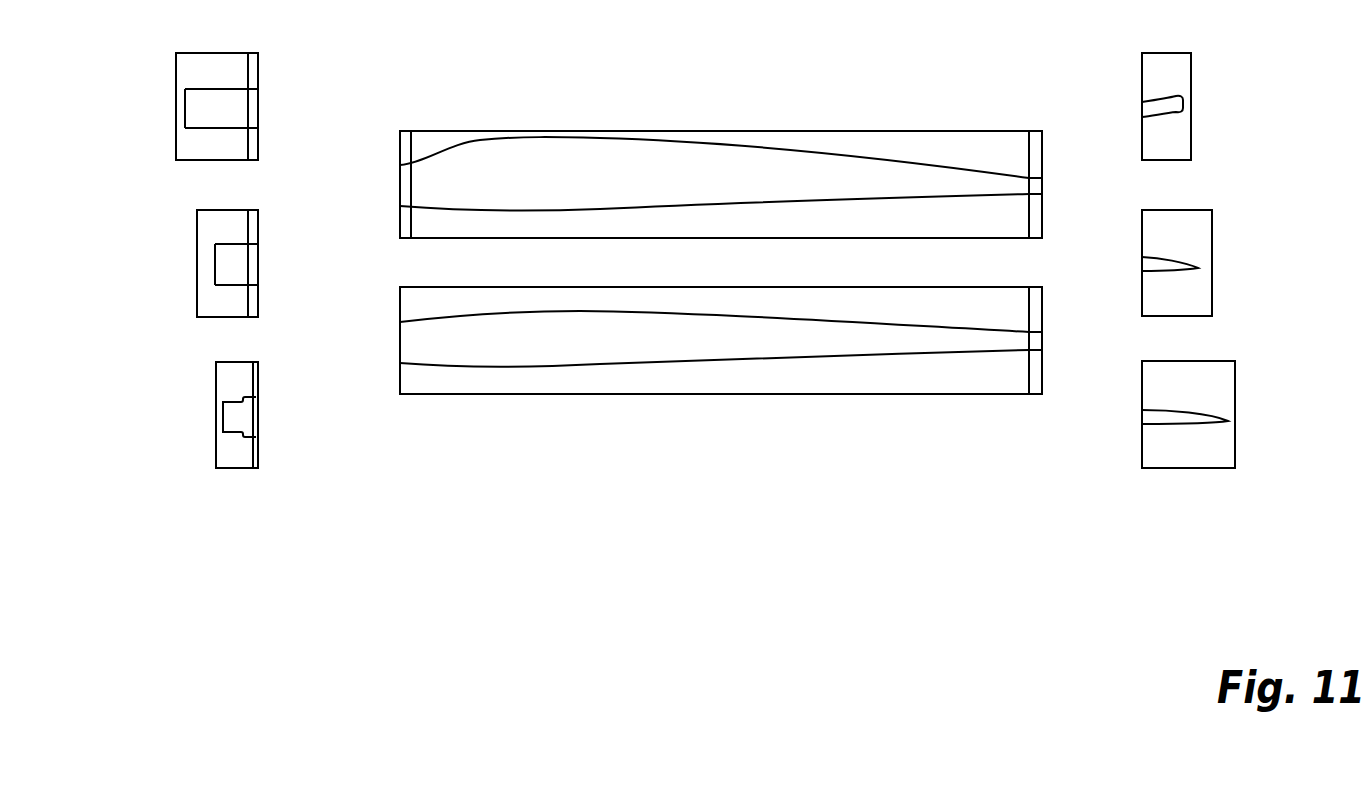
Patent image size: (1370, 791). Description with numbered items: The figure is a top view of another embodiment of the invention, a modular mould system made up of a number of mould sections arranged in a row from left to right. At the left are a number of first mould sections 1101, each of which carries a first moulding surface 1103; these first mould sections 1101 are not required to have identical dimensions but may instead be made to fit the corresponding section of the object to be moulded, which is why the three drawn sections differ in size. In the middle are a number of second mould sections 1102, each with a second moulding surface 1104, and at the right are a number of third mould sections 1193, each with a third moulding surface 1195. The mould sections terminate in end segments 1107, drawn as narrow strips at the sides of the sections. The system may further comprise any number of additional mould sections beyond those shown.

The first mould section 1101 is at (227, 375).
The second mould section 1102 is at (742, 377).
The first moulding surface 1103 is at (215, 107).
The second moulding surface 1104 is at (617, 175).
The end segment 1107 is at (257, 417).
The third mould section 1193 is at (1210, 375).
The third moulding surface 1195 is at (1152, 108).